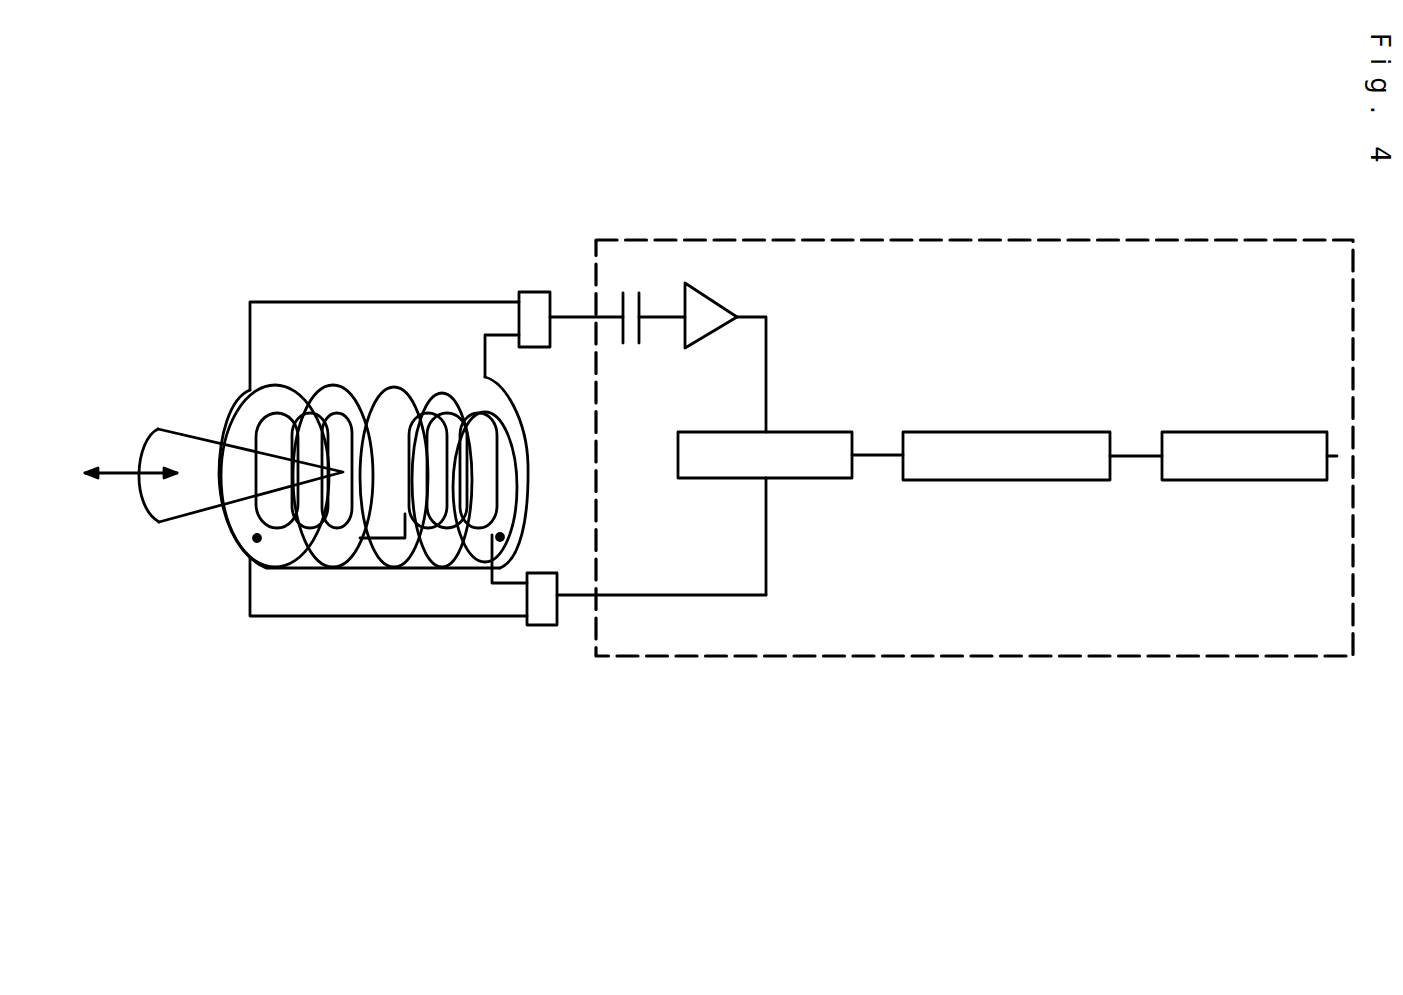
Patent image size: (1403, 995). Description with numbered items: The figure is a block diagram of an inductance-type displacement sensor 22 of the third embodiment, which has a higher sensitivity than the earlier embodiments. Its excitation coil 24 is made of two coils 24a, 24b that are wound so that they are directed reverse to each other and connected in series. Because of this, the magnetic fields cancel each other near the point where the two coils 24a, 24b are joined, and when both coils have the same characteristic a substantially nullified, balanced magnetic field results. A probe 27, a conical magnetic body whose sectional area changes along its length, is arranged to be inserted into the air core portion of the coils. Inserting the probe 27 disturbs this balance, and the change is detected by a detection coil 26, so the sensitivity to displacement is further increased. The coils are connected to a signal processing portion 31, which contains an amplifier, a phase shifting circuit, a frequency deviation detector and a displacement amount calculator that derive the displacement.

The displacement sensor 22 is at (417, 212).
The excitation coil 24 is at (405, 735).
The coil 24a is at (273, 567).
The coil 24b is at (433, 562).
The detection coil 26 is at (233, 405).
The probe 27 is at (178, 505).
The signal processing portion 31 is at (1053, 240).